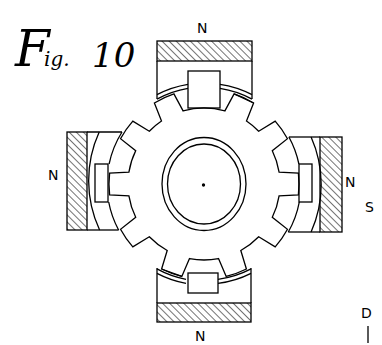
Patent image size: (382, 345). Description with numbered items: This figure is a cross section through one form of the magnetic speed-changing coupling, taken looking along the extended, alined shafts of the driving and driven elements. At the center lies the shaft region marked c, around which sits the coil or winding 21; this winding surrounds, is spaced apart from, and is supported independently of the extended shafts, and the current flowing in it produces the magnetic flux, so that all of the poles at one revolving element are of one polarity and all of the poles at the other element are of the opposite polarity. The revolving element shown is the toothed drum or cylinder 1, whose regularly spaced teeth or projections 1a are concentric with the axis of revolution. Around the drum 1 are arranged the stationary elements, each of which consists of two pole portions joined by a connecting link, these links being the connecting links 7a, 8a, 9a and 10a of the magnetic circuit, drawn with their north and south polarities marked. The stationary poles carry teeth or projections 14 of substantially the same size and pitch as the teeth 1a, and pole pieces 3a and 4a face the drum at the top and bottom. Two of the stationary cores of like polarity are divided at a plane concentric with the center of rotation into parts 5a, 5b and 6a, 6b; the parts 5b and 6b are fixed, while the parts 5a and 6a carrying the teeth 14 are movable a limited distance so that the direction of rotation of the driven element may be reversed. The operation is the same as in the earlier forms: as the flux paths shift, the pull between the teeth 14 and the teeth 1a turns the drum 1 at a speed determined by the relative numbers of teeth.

The drum or cylinder 1 is at (145, 182).
The teeth or projections 1a is at (241, 110).
The coil or winding 21 is at (233, 138).
The rotor center c is at (188, 188).
The upper pole piece 3a is at (224, 70).
The lower pole piece 4a is at (172, 293).
The movable part of core 5 5a is at (86, 140).
The fixed part of core 5 5b is at (103, 135).
The movable part of core 6 6a is at (315, 143).
The fixed part of core 6 6b is at (300, 143).
The connecting link 7a is at (255, 50).
The connecting link 8a is at (253, 311).
The connecting link 9a is at (342, 145).
The connecting link 10a is at (75, 203).
The teeth or projections 14 is at (238, 86).